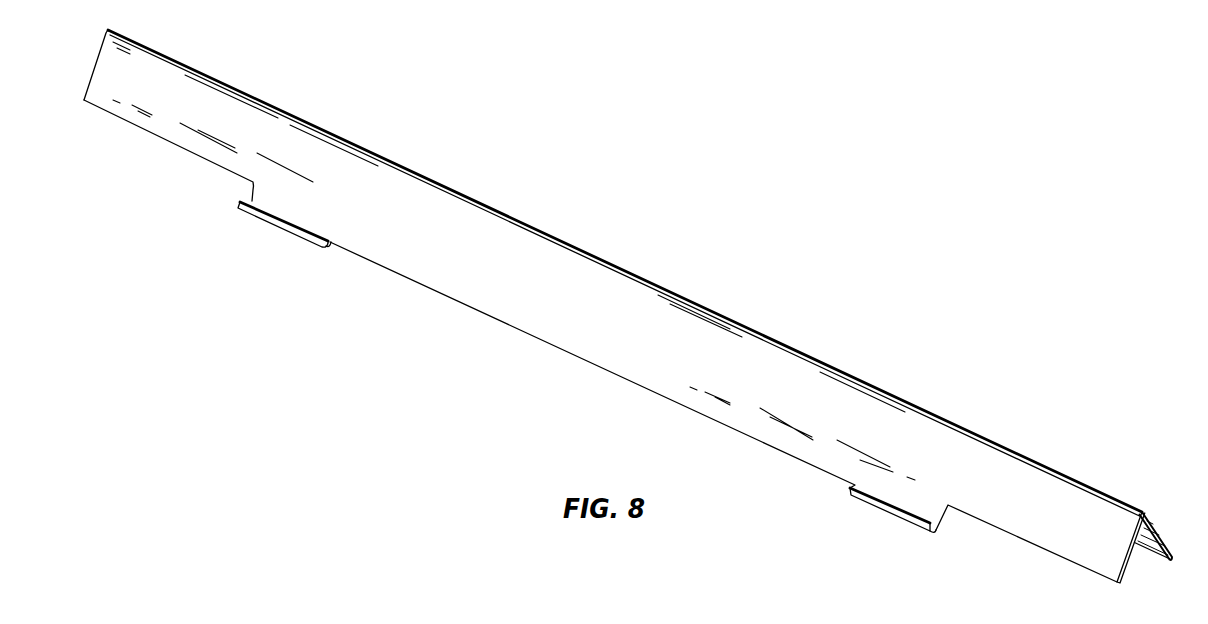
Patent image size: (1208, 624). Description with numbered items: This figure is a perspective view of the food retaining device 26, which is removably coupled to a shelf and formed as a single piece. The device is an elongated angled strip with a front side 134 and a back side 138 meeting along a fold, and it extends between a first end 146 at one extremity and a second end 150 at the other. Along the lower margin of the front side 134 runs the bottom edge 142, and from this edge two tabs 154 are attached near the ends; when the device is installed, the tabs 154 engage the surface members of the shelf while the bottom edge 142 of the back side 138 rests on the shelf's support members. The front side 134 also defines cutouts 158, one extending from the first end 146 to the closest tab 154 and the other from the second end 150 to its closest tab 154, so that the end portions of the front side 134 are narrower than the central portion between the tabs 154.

The food retaining device 26 is at (810, 223).
The front side 134 is at (485, 279).
The back side 138 is at (1158, 534).
The bottom edge 142 is at (626, 378).
The first end 146 is at (93, 60).
The second end 150 is at (1131, 551).
The tab 154 is at (275, 220).
The cutout 158 is at (189, 153).